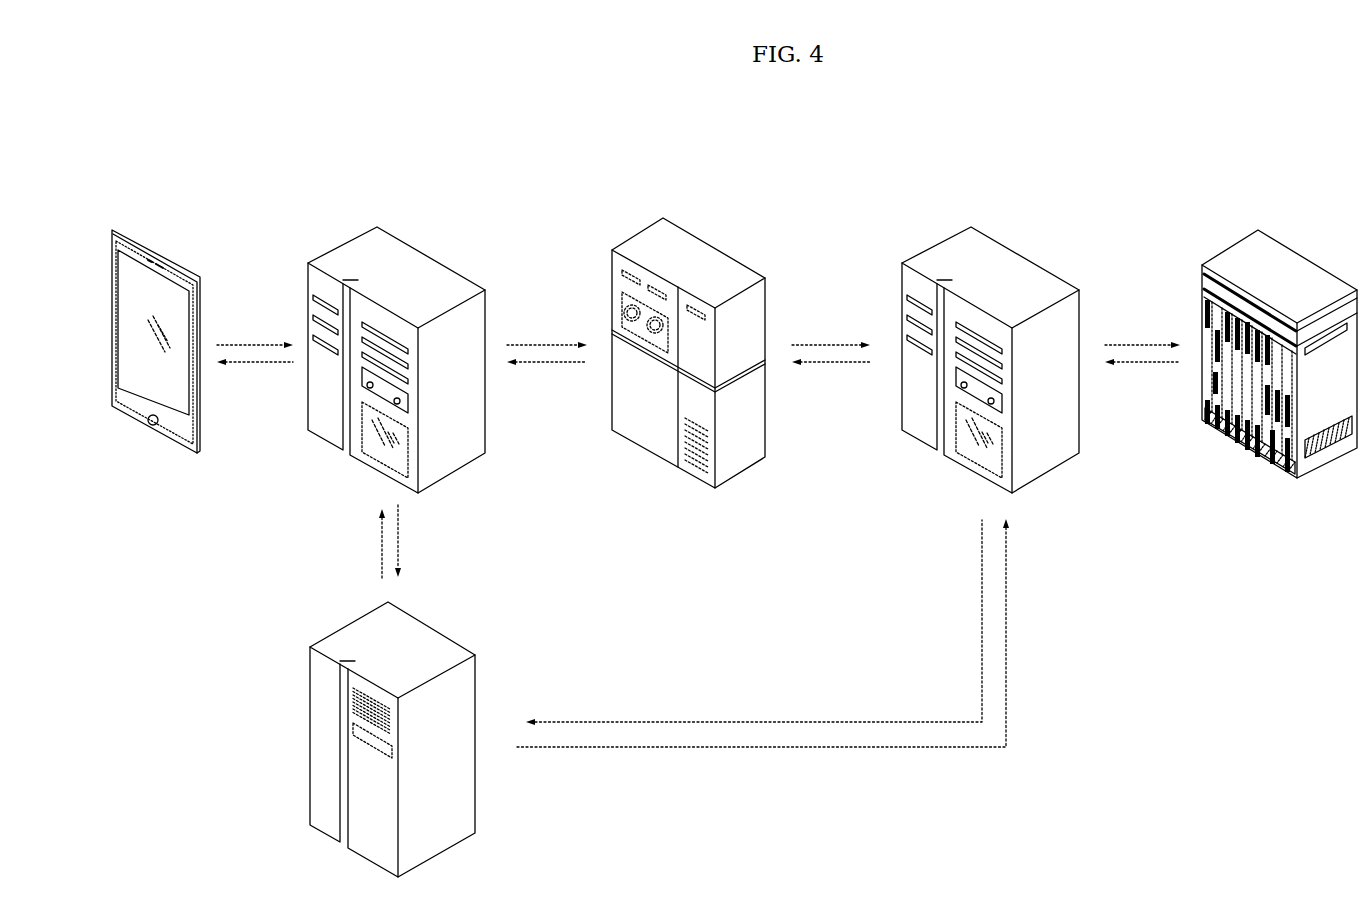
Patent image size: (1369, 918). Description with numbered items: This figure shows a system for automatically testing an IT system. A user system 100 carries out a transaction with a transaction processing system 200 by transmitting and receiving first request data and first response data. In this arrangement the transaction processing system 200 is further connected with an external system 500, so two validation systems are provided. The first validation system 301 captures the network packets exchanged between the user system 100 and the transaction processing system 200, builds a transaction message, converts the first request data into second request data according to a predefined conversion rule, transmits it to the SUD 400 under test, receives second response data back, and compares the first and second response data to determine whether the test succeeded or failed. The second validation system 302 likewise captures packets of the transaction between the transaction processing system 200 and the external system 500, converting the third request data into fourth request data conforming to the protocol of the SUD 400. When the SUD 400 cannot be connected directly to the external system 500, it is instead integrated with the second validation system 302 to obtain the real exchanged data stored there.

The user system 100 is at (128, 229).
The first validation system 301 is at (388, 231).
The transaction processing system 200 is at (675, 220).
The second validation system 302 is at (982, 231).
The external system 500 is at (1272, 235).
The SUD 400 is at (458, 638).